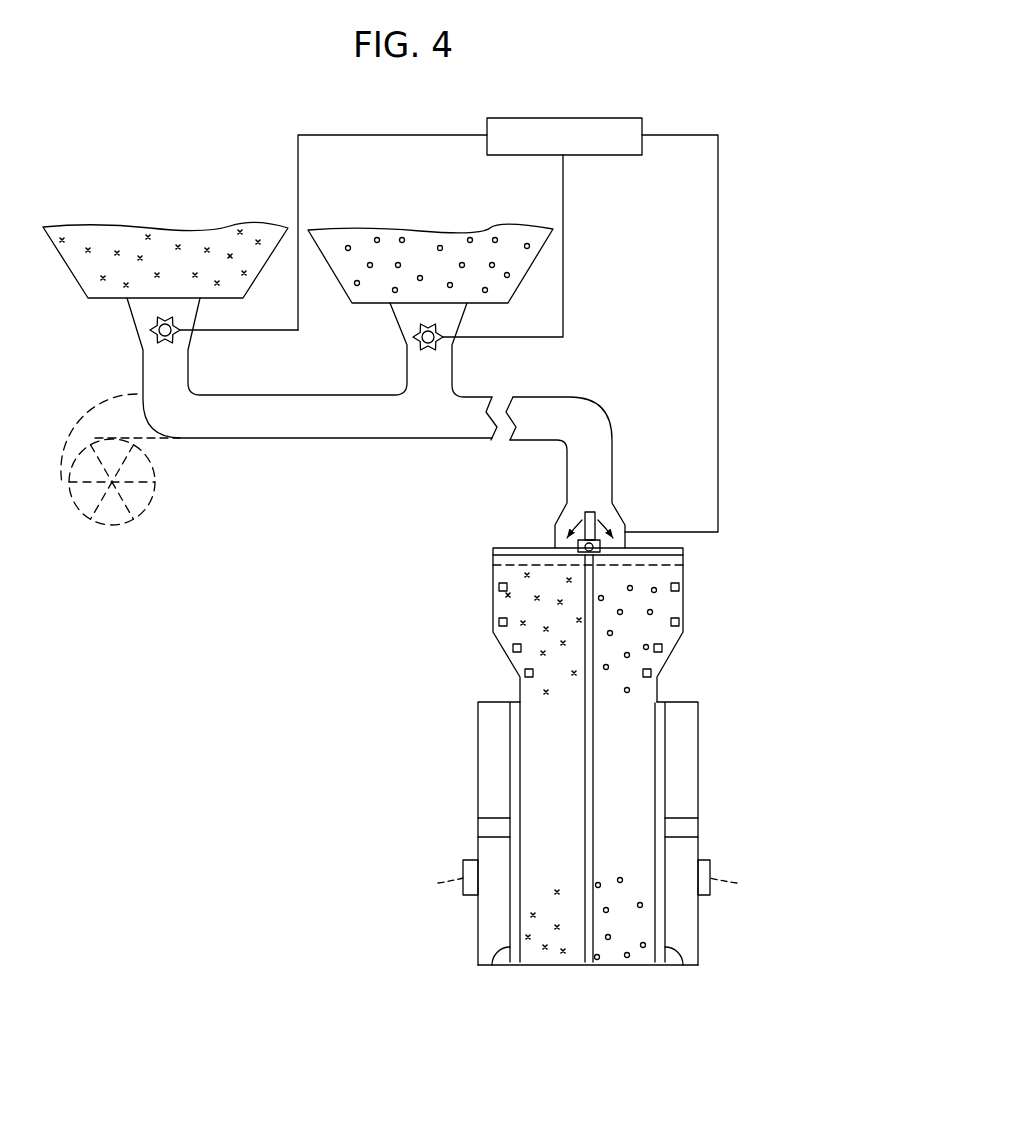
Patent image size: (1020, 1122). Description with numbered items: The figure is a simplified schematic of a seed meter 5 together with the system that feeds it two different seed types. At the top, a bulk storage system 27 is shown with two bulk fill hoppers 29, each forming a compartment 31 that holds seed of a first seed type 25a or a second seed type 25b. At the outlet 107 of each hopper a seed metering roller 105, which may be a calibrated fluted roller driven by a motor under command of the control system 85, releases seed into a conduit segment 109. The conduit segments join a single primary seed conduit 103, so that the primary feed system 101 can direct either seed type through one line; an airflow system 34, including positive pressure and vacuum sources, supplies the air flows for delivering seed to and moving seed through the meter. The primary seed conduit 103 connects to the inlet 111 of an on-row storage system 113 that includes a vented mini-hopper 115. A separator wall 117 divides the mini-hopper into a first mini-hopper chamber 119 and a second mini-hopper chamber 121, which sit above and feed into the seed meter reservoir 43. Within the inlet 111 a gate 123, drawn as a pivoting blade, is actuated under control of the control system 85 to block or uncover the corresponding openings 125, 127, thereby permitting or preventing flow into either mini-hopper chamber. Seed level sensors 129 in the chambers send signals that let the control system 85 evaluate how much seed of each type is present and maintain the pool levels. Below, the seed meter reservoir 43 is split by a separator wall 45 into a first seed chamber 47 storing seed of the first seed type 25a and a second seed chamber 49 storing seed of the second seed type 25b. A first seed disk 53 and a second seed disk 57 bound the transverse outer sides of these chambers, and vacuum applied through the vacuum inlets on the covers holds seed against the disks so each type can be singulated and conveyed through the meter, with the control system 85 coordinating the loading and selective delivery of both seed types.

The bulk storage system 27 is at (277, 93).
The control system 85 is at (565, 118).
The bulk fill hopper 29 is at (157, 221).
The compartment 31 is at (228, 228).
The first seed type 25a is at (116, 252).
The second seed type 25b is at (348, 248).
The outlet 107 is at (188, 322).
The seed metering roller 105 is at (160, 340).
The conduit segment 109 is at (175, 375).
The primary feed system 101 is at (474, 326).
The primary seed conduit 103 is at (538, 398).
The airflow system 34 is at (159, 509).
The gate 123 is at (597, 498).
The inlet 111 is at (617, 526).
The first mini-hopper chamber 119 is at (528, 561).
The opening 125 is at (493, 568).
The opening 127 is at (648, 573).
The second mini-hopper chamber 121 is at (678, 566).
The on-row storage system 113 is at (585, 735).
The vented mini-hopper 115 is at (486, 608).
The seed level sensor 129 is at (526, 673).
The separator wall 117 is at (594, 693).
The seed meter reservoir 43 is at (588, 855).
The separator wall 45 is at (585, 795).
The first seed disk 53 is at (503, 947).
The first seed chamber 47 is at (555, 955).
The second seed chamber 49 is at (615, 957).
The second seed disk 57 is at (665, 947).
The seed meter 5 is at (544, 1031).